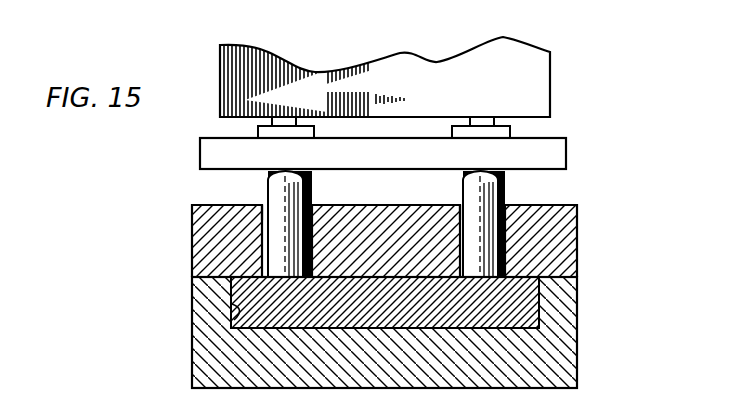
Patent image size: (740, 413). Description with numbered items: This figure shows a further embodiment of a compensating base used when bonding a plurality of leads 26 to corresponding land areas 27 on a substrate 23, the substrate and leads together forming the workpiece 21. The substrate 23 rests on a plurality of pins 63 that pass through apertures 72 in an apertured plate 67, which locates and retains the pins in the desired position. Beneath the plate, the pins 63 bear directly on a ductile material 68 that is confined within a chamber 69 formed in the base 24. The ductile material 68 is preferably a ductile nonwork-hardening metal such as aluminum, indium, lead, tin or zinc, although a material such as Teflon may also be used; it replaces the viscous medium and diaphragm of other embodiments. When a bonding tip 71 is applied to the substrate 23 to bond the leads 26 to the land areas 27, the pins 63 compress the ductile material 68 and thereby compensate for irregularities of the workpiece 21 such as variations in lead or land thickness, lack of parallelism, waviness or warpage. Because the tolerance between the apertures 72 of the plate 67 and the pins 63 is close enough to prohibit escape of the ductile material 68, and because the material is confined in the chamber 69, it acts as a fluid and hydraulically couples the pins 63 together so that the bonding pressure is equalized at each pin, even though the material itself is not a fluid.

The bonding tip 71 is at (368, 75).
The workpiece 21 is at (566, 131).
The land area 27 is at (465, 133).
The lead 26 is at (484, 121).
The substrate 23 is at (558, 157).
The apertured plate 67 is at (567, 235).
The pin 63 is at (306, 194).
The aperture 72 is at (263, 216).
The base 24 is at (563, 363).
The ductile material 68 is at (527, 307).
The chamber 69 is at (232, 316).